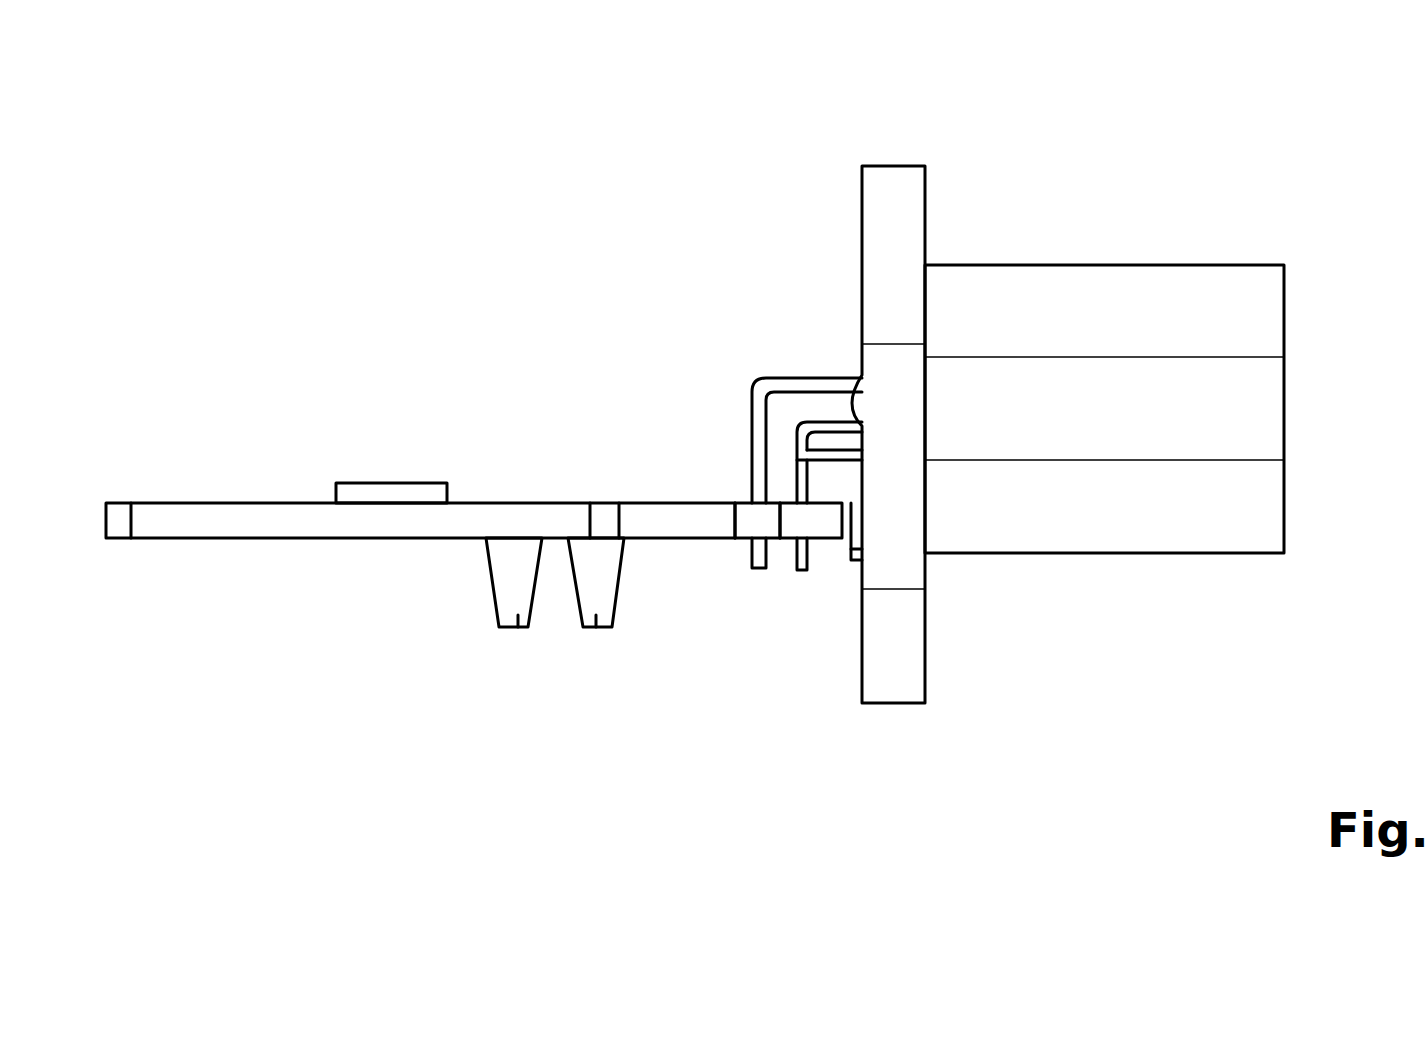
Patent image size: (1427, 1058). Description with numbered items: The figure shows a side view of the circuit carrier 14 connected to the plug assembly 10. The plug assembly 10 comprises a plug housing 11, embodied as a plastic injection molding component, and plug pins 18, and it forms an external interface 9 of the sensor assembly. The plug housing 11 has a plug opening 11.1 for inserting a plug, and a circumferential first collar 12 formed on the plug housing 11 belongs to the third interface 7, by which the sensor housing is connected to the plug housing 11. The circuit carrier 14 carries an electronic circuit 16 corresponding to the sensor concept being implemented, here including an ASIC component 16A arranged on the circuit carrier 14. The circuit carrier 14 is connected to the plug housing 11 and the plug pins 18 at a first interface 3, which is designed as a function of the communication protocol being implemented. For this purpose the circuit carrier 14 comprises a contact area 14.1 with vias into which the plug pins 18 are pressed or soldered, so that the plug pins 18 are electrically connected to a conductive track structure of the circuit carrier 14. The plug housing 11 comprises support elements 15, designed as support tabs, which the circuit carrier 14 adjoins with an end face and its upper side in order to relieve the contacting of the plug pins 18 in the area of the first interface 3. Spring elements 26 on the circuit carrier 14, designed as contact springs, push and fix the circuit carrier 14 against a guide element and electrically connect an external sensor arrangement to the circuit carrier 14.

The first interface 3 is at (797, 288).
The third interface 7 is at (858, 137).
The external interface 9 is at (1315, 343).
The plug assembly 10 is at (1320, 136).
The plug housing 11 is at (1265, 430).
The plug opening 11.1 is at (1284, 385).
The first collar 12 is at (911, 633).
The circuit carrier 14 is at (171, 513).
The contact area 14.1 is at (752, 503).
The support element 15 is at (818, 485).
The electronic circuit 16 is at (265, 480).
The ASIC component 16A is at (392, 495).
The plug pins 18 is at (782, 380).
The spring element 26 is at (596, 628).